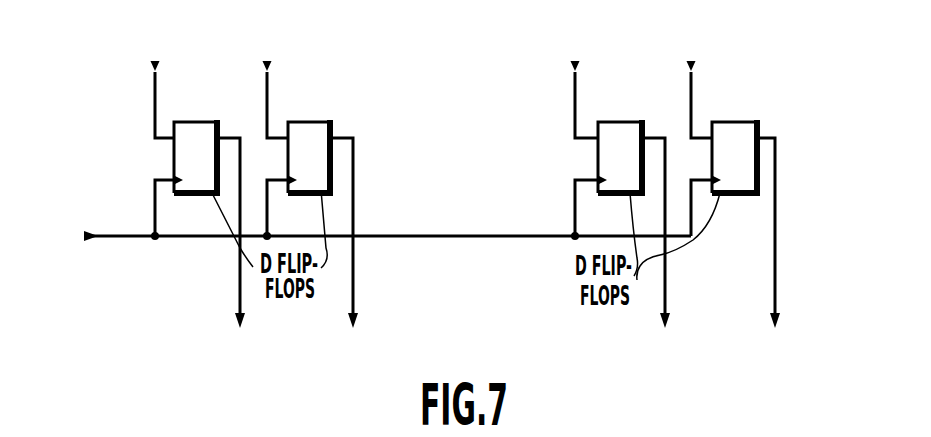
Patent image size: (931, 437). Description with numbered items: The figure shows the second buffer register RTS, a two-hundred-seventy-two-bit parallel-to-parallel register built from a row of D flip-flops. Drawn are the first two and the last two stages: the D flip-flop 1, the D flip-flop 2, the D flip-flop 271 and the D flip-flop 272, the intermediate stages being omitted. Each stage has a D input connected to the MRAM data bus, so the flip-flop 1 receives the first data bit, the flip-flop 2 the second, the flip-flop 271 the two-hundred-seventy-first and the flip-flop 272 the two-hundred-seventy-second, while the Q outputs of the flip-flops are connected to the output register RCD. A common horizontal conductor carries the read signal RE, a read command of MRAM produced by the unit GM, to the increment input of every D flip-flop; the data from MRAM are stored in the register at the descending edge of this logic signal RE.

The D flip-flop RTS272 272 is at (202, 196).
The D flip-flop RTS271 271 is at (308, 137).
The D flip-flop RTS2 2 is at (620, 133).
The D flip-flop RTS1 1 is at (727, 133).
The read signal RE is at (112, 278).